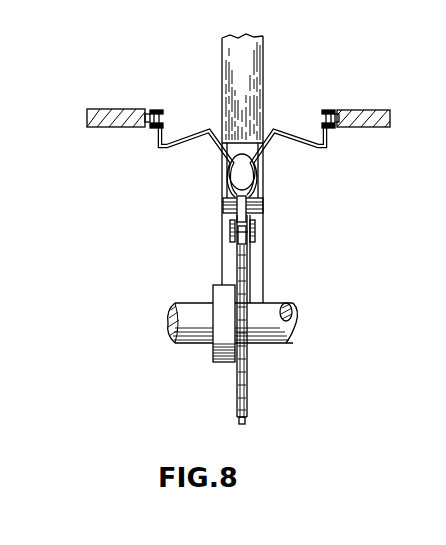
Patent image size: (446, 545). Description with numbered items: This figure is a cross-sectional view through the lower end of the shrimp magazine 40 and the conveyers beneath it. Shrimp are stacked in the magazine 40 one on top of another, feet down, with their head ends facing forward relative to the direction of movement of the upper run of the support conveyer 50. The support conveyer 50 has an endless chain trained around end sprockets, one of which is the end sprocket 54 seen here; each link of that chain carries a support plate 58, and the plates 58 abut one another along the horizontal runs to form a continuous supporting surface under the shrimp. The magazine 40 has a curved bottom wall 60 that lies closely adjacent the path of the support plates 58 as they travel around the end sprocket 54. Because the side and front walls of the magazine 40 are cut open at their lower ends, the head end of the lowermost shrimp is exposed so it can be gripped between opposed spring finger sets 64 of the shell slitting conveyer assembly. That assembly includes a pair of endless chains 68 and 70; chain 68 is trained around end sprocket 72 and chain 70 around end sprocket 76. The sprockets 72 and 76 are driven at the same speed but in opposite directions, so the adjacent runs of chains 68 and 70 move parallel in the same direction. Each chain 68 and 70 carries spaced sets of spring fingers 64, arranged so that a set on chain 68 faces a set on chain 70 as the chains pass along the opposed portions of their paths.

The magazine 40 is at (253, 74).
The support conveyer 50 is at (248, 250).
The end sprocket 54 is at (248, 391).
The support plate 58 is at (246, 208).
The bottom wall 60 is at (224, 262).
The spring finger sets 64 is at (192, 144).
The endless chain 68 is at (155, 109).
The endless chain 70 is at (329, 109).
The end sprocket 72 is at (109, 111).
The end sprocket 76 is at (373, 111).